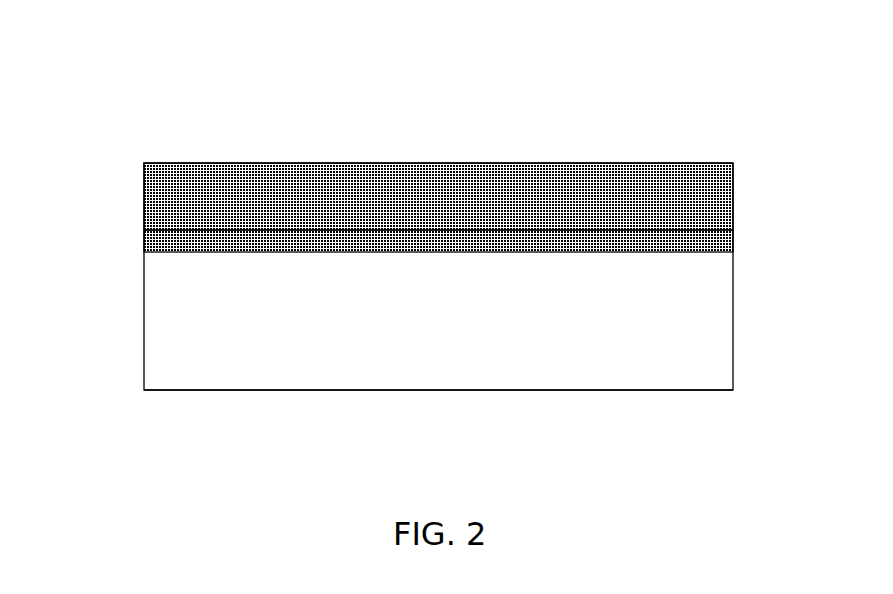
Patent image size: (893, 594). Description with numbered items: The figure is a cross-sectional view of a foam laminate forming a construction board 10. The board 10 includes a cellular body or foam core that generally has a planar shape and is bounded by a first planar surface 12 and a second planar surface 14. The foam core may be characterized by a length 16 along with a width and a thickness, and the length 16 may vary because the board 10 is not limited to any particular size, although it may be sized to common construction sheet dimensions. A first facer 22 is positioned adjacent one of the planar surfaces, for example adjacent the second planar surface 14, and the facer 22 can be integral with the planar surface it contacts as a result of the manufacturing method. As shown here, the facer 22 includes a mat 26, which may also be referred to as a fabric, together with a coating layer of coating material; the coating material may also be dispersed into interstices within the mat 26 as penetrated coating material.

The board 10 is at (445, 248).
The first planar surface 12 is at (722, 308).
The second planar surface 14 is at (663, 252).
The length 16 is at (643, 390).
The first facer 22 is at (445, 201).
The mat 26 is at (733, 205).